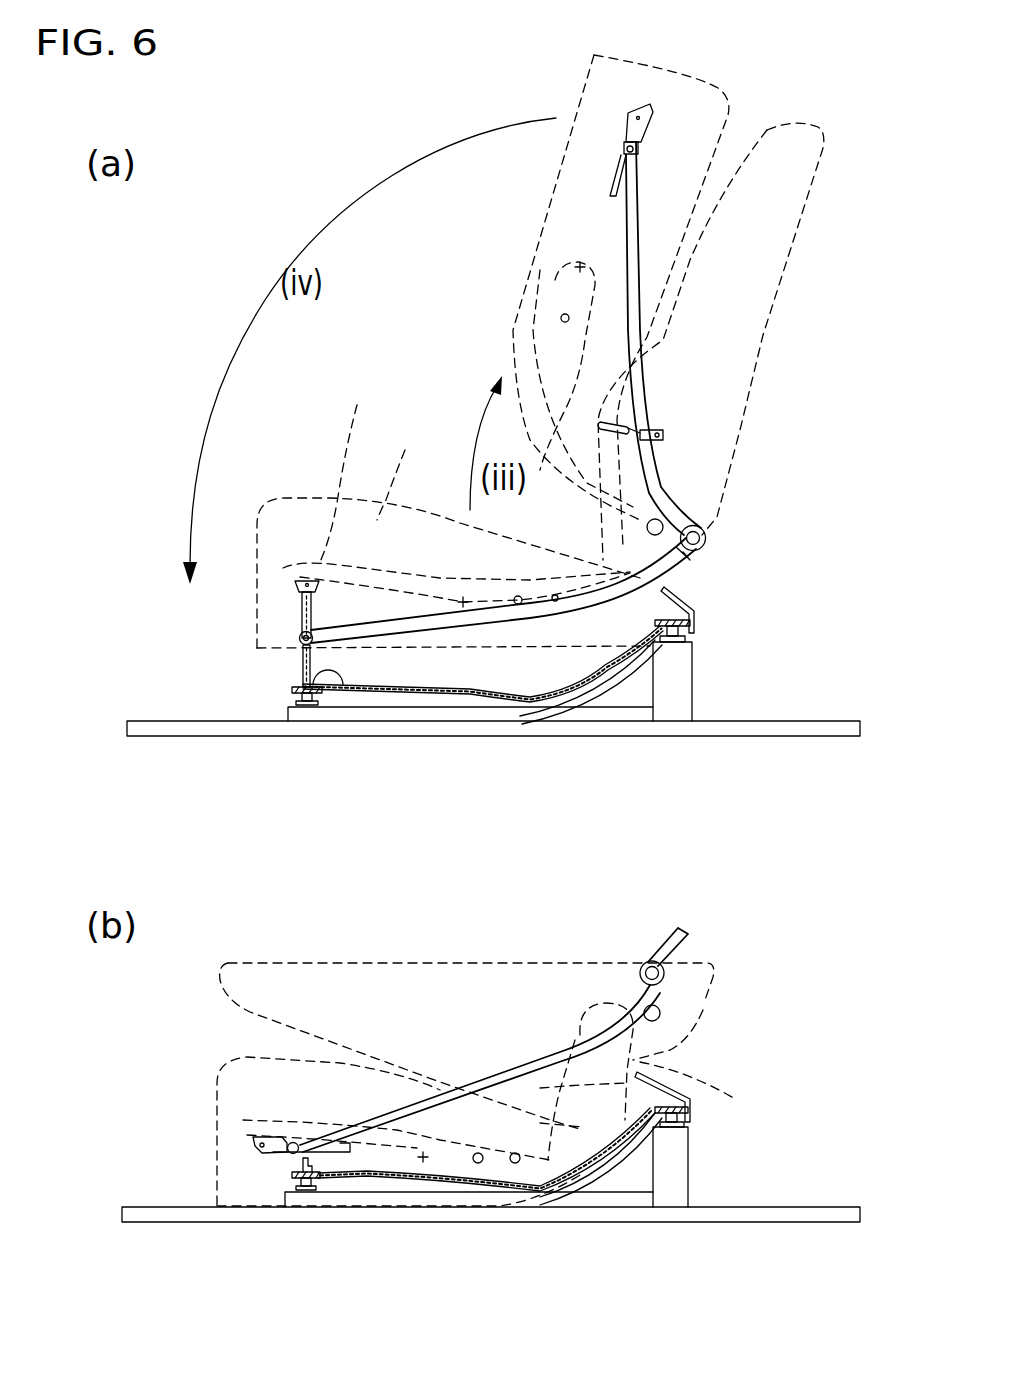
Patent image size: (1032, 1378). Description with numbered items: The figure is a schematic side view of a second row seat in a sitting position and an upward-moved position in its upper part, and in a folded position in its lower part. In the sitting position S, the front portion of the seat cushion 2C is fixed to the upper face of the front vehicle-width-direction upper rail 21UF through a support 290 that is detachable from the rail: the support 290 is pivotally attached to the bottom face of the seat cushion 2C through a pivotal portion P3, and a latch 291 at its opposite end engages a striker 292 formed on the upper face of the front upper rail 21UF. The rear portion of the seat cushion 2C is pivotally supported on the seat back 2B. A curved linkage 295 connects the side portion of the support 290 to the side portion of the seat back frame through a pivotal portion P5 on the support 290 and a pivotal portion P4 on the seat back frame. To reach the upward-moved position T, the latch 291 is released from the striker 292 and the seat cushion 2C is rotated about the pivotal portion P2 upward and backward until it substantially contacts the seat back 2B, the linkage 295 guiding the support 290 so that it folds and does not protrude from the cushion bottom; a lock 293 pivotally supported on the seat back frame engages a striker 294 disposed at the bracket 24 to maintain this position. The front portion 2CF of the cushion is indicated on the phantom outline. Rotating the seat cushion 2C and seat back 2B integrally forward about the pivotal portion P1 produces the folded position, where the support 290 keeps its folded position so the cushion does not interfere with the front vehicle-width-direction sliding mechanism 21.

The upward-moved position T is at (516, 242).
The seat back 2B is at (757, 258).
The seat cushion 2C is at (407, 465).
The seat cushion front portion 2CF is at (361, 463).
The sitting position S is at (312, 485).
The striker 294 is at (622, 405).
The lock 293 is at (612, 425).
The pivotal portion P2 is at (680, 485).
The pivotal portion P4 is at (707, 539).
The pivotal portion P1 is at (668, 548).
The front vehicle-width-direction sliding mechanism 21 is at (708, 645).
The bracket 24 is at (625, 615).
The linkage 295 is at (410, 628).
The striker 292 is at (343, 688).
The front vehicle-width-direction upper rail 21UF is at (283, 700).
The latch 291 is at (295, 673).
The pivotal portion P5 is at (303, 637).
The support 290 is at (302, 610).
The pivotal portion P3 is at (295, 585).